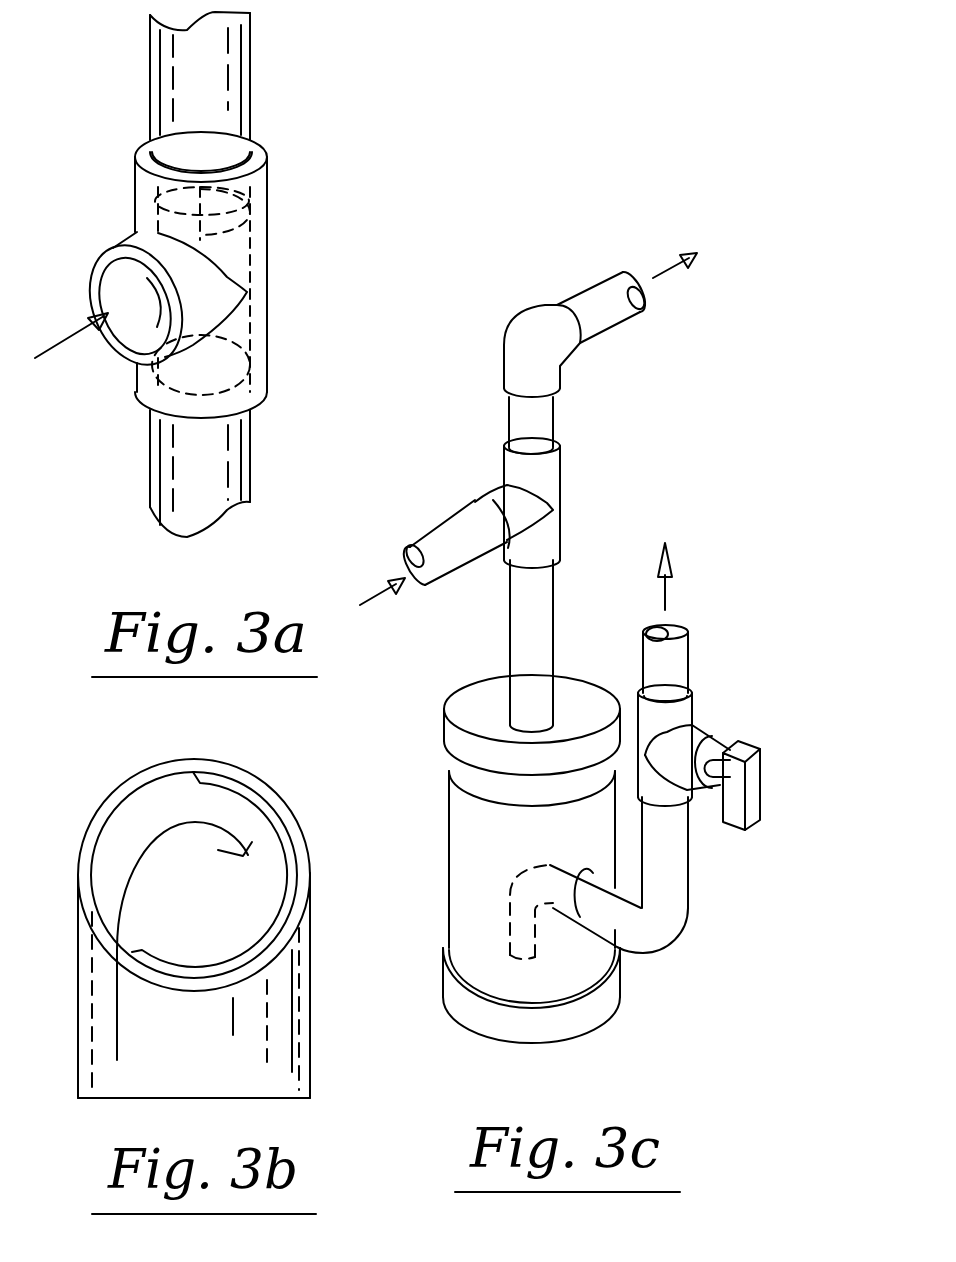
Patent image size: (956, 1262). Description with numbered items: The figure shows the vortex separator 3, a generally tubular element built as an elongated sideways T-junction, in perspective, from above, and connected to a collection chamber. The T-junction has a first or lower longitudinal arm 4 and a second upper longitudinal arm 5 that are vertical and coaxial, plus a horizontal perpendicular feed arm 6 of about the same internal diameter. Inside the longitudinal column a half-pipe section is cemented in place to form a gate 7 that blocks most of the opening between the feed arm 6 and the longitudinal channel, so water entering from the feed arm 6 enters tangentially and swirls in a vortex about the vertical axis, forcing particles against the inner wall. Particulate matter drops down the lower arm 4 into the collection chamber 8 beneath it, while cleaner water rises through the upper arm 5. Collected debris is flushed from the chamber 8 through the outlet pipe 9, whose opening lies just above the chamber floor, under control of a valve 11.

In FIG. 3A, the vortex separator 3 is at (289, 189).
In FIG. 3A, the first longitudinal arm 4 is at (242, 450).
In FIG. 3C, the first longitudinal arm 4 is at (518, 637).
In FIG. 3A, the second longitudinal arm 5 is at (238, 73).
In FIG. 3C, the second longitudinal arm 5 is at (545, 420).
In FIG. 3A, the horizontal perpendicular feed arm 6 is at (120, 245).
In FIG. 3B, the horizontal perpendicular feed arm 6 is at (280, 1033).
In FIG. 3C, the horizontal perpendicular feed arm 6 is at (503, 493).
In FIG. 3A, the gate 7 is at (242, 259).
In FIG. 3B, the gate 7 is at (240, 953).
In FIG. 3C, the container 8 is at (473, 843).
In FIG. 3C, the outlet pipe 9 is at (668, 885).
In FIG. 3C, the valve handle 11 is at (742, 743).